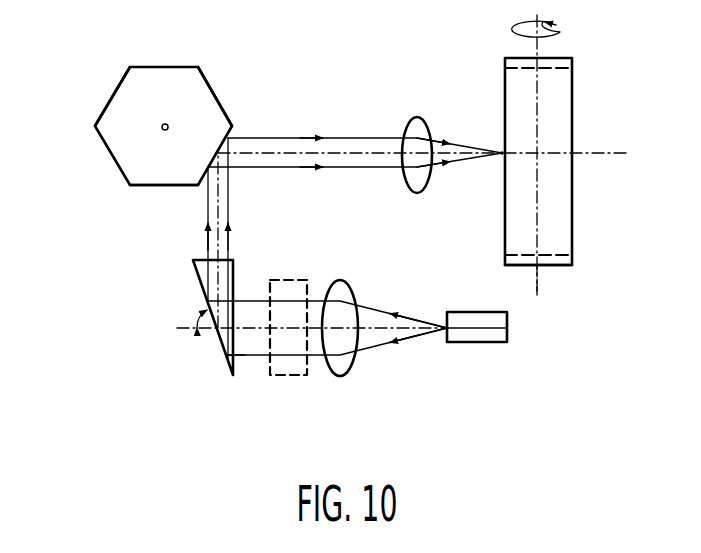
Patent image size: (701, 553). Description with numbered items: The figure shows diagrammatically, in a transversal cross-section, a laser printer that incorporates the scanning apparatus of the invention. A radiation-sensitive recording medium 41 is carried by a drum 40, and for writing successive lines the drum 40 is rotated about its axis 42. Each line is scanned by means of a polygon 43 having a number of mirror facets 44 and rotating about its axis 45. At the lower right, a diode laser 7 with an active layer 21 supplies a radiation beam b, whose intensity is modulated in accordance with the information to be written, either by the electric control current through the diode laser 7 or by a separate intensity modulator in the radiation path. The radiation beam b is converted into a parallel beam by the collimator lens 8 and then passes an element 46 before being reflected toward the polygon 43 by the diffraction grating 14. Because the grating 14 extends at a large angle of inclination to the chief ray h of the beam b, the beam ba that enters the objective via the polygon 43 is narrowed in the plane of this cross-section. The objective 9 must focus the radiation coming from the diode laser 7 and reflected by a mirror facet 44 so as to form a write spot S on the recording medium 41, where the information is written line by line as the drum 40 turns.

The polygon 43 is at (148, 54).
The mirror facets 44 is at (107, 97).
The axis 45 is at (162, 131).
The objective 9 is at (416, 193).
The write spot S is at (501, 156).
The radiation-sensitive recording medium 41 is at (558, 210).
The drum 40 is at (555, 265).
The axis 42 is at (536, 284).
The diode laser 7 is at (477, 326).
The active layer 21 is at (486, 330).
The radiation beam b is at (406, 331).
The collimator lens 8 is at (340, 376).
The optical element 46 is at (289, 378).
The chief ray h is at (246, 330).
The diffraction grating 14 is at (222, 345).
The beam entering the objective ba is at (225, 246).